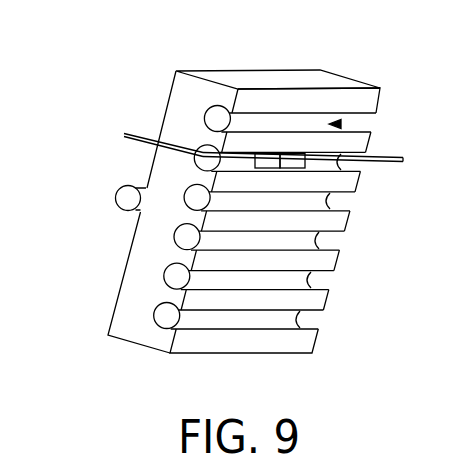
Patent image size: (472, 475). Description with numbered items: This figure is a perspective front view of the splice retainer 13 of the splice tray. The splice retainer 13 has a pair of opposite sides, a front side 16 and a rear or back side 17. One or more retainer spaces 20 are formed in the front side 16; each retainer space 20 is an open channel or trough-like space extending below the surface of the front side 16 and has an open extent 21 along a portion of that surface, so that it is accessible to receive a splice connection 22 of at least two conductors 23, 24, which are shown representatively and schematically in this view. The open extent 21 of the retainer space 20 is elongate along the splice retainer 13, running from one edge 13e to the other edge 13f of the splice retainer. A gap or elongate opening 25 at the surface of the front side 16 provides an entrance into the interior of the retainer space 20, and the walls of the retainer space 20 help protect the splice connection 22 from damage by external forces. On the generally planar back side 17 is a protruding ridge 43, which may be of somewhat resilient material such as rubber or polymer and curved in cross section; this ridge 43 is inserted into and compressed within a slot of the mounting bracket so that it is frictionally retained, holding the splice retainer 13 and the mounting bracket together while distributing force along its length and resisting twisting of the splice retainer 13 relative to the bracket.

The splice retainer 13 is at (297, 70).
The edge of splice retainer 13e is at (316, 296).
The edge of splice retainer 13f is at (183, 296).
The front side 16 is at (372, 102).
The rear side 17 is at (170, 92).
The retainer space 20 is at (333, 124).
The open extent 21 is at (359, 119).
The splice connection 22 is at (285, 160).
The conductor 23 is at (382, 162).
The conductor 24 is at (138, 131).
The gap or elongate opening 25 is at (331, 288).
The ridge 43 is at (117, 198).